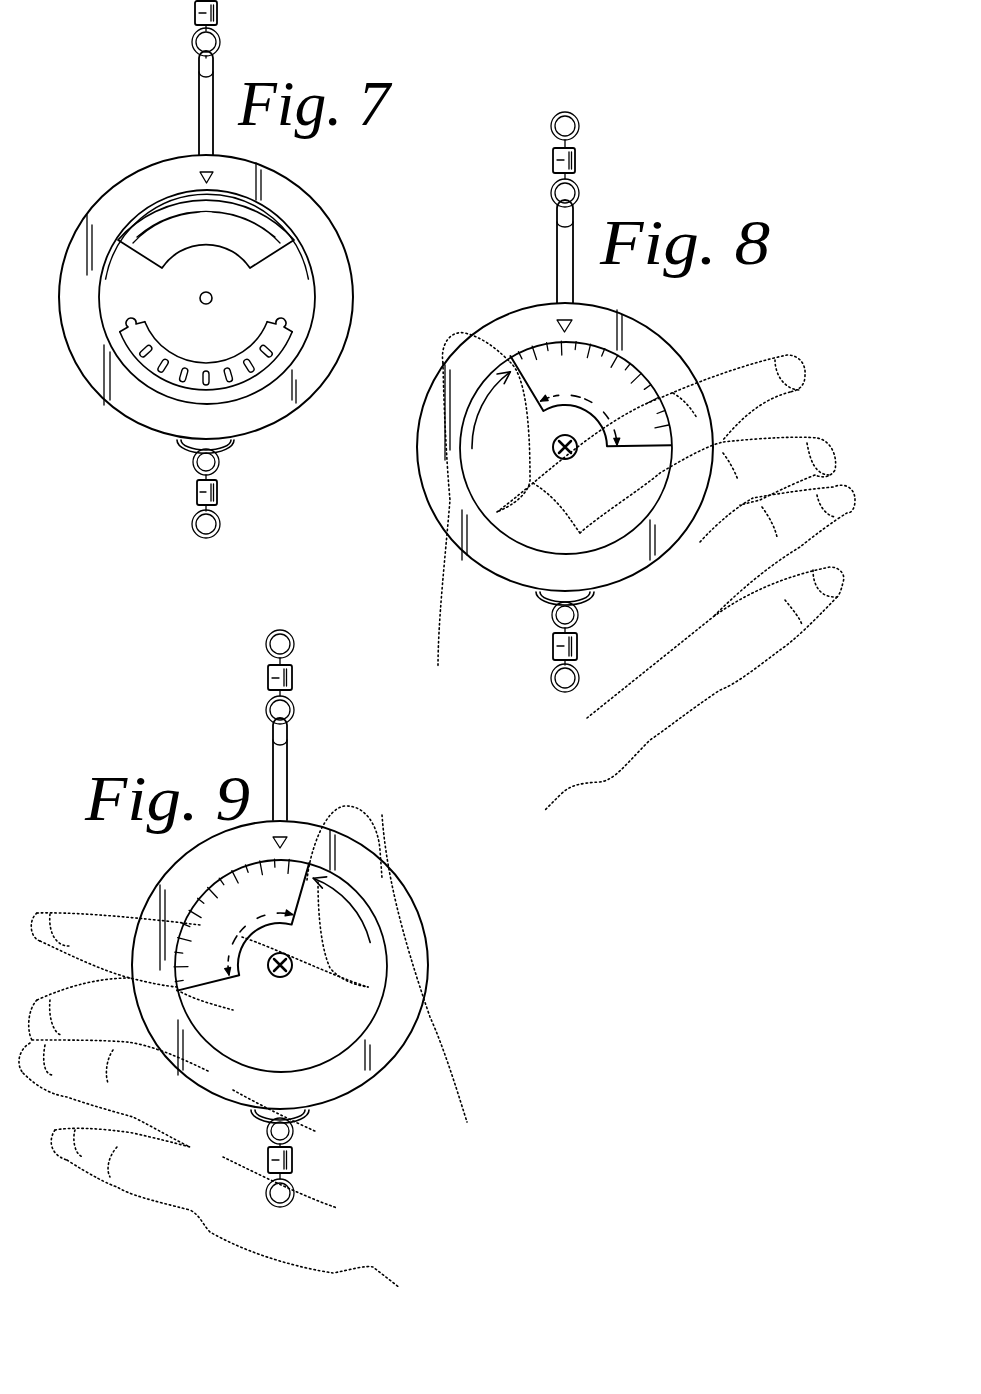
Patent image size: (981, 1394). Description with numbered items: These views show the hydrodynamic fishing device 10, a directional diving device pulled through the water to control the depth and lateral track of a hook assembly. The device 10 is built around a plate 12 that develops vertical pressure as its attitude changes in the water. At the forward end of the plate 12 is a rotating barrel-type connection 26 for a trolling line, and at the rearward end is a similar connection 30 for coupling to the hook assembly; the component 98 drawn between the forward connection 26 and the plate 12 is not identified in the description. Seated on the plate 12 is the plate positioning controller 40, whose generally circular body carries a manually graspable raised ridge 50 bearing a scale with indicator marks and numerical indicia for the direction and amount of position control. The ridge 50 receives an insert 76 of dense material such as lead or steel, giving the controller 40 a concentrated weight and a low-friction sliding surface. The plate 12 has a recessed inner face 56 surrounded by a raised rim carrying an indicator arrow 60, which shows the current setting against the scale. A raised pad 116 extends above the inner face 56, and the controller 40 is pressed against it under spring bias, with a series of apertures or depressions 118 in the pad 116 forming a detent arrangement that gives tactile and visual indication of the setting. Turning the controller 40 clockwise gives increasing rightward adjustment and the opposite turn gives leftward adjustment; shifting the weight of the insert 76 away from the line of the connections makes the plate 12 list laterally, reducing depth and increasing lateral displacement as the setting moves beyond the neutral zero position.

In FIG. 8, the hydrodynamic fishing device 10 is at (564, 402).
In FIG. 9, the hydrodynamic fishing device 10 is at (300, 918).
In FIG. 7, the plate 12 is at (323, 208).
In FIG. 8, the plate 12 is at (685, 357).
In FIG. 9, the plate 12 is at (398, 877).
In FIG. 7, the connection 26 is at (193, 10).
In FIG. 8, the connection 26 is at (553, 160).
In FIG. 9, the connection 26 is at (268, 678).
In FIG. 7, the connection 30 is at (218, 493).
In FIG. 8, the connection 30 is at (577, 645).
In FIG. 9, the connection 30 is at (292, 1158).
In FIG. 8, the plate positioning controller 40 is at (482, 482).
In FIG. 9, the plate positioning controller 40 is at (363, 1013).
In FIG. 8, the raised ridge 50 is at (650, 438).
In FIG. 9, the raised ridge 50 is at (218, 982).
In FIG. 7, the inner face 56 is at (127, 303).
In FIG. 8, the arrow 60 is at (563, 320).
In FIG. 9, the arrow 60 is at (280, 833).
In FIG. 7, the insert 76 is at (258, 247).
In FIG. 7, the stem shaft 98 is at (199, 93).
In FIG. 8, the stem shaft 98 is at (557, 243).
In FIG. 9, the stem shaft 98 is at (273, 760).
In FIG. 7, the raised pad 116 is at (165, 351).
In FIG. 7, the apertures or depressions 118 is at (227, 372).